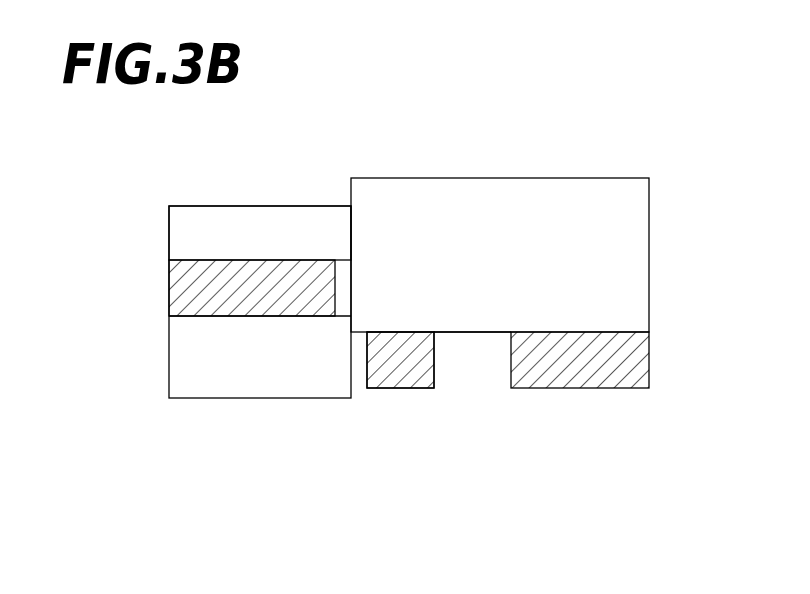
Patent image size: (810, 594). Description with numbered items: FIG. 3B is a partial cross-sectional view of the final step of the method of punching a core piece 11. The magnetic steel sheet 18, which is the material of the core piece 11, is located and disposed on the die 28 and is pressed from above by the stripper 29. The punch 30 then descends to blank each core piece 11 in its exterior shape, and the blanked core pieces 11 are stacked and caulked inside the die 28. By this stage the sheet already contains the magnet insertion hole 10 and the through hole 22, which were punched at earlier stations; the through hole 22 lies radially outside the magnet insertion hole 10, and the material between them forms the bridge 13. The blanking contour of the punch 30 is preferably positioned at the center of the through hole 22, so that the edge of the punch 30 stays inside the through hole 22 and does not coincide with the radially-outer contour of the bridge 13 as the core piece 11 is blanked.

The magnet insertion hole 10 is at (470, 367).
The core piece 11 is at (576, 390).
The bridge 13 is at (403, 372).
The magnetic steel sheet 18 is at (158, 290).
The through hole 22 is at (359, 375).
The die 28 is at (205, 385).
The stripper 29 is at (252, 227).
The punch 30 is at (507, 213).